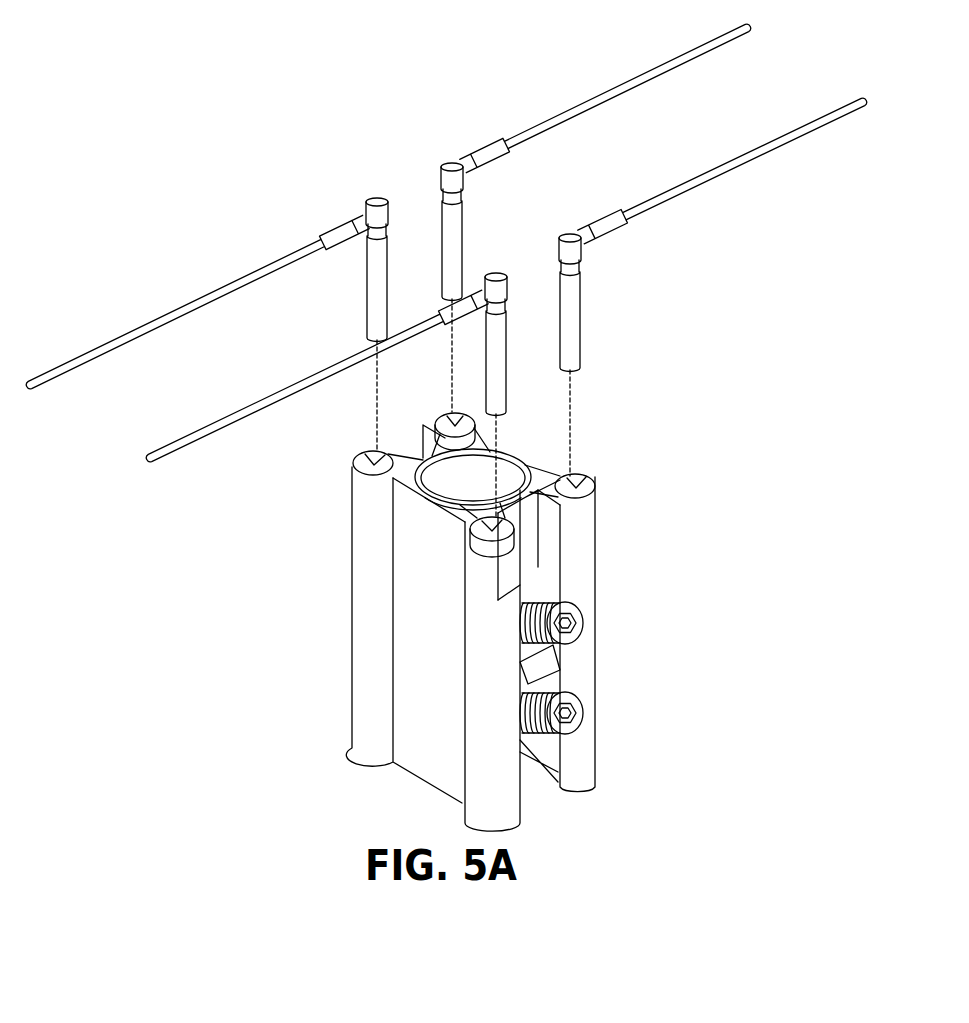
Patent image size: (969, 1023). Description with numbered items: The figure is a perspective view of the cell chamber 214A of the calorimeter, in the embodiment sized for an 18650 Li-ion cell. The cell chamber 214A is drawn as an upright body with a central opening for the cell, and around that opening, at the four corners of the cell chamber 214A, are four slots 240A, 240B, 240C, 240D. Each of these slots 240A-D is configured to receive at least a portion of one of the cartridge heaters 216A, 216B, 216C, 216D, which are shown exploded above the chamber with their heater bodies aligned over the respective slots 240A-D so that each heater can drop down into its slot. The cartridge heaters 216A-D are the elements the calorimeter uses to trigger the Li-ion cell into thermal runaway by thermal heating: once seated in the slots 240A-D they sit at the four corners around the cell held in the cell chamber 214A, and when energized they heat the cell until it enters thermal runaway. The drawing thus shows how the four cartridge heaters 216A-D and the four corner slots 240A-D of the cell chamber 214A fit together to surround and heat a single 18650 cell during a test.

The cell chamber 214A is at (493, 615).
The cartridge heater 216A is at (481, 153).
The cartridge heater 216B is at (337, 226).
The cartridge heater 216C is at (601, 244).
The cartridge heater 216D is at (507, 355).
The slot 240A is at (442, 424).
The slot 240B is at (374, 463).
The slot 240C is at (589, 498).
The slot 240D is at (513, 556).